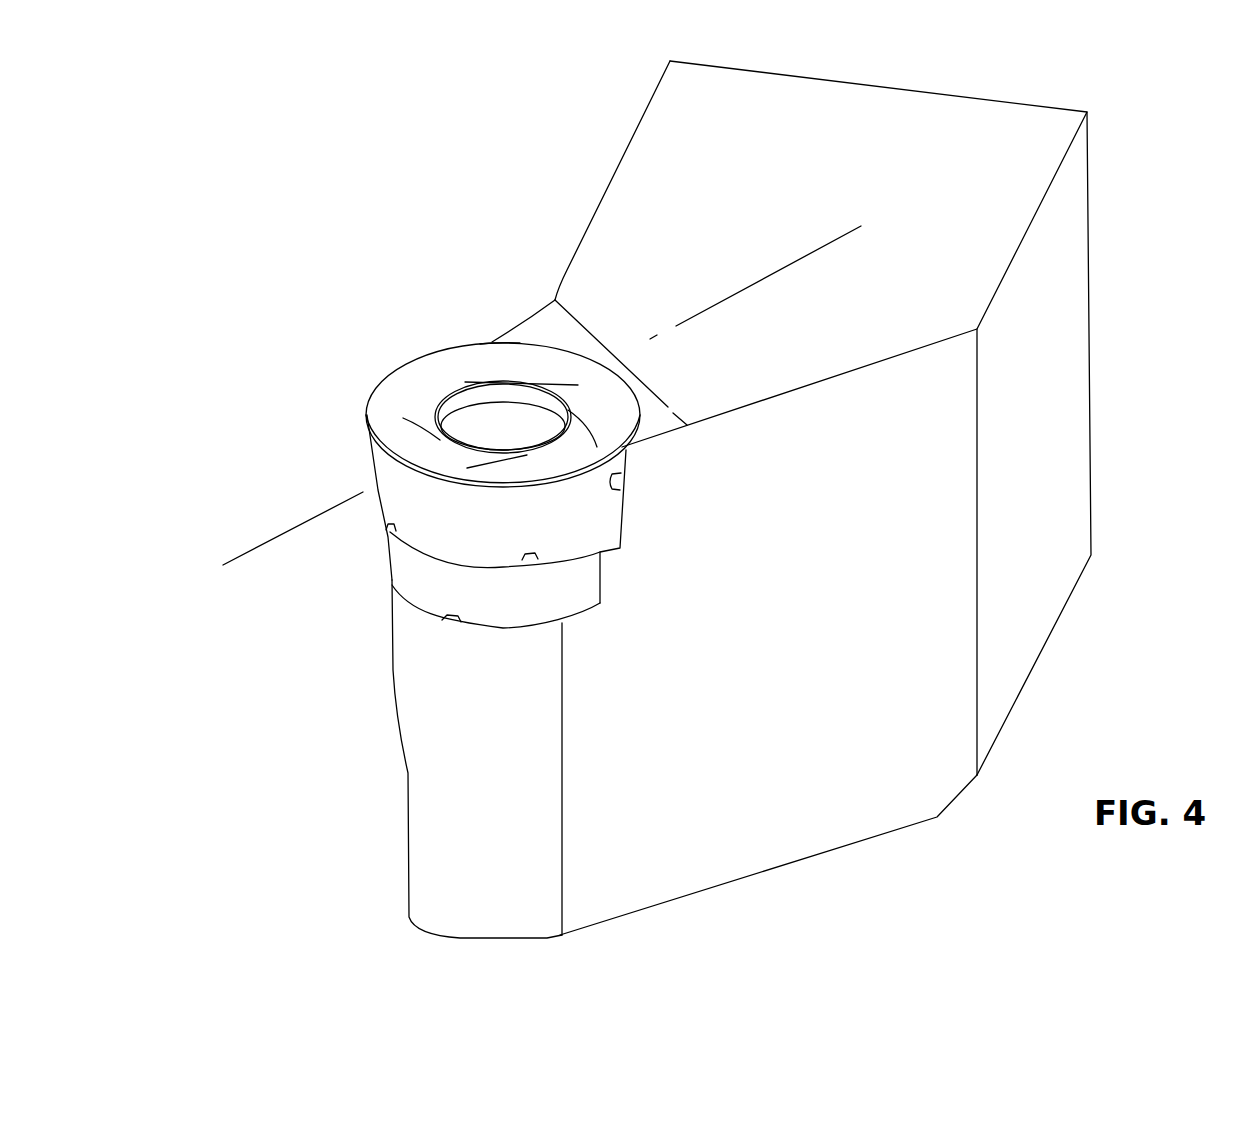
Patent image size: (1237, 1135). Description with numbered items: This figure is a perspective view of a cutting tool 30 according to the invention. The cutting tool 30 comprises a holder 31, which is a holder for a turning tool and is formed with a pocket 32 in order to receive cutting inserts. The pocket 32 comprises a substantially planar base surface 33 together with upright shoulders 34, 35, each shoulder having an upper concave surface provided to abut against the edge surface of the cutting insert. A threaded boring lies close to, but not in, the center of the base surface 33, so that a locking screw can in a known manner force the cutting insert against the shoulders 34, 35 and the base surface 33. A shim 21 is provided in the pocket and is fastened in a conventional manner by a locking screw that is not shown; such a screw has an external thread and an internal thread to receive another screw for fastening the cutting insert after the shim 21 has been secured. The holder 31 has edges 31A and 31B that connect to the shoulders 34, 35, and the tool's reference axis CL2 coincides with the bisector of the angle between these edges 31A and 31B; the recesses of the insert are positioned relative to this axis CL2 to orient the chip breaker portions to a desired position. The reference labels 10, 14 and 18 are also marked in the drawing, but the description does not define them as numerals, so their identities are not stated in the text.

The cutting insert / ring 10 is at (372, 381).
The flange top surface 14 is at (365, 413).
The central bore 18 is at (470, 373).
The shim 21 is at (427, 583).
The cutting tool 30 is at (410, 228).
The holder 31 is at (934, 267).
The edge of the holder 31A is at (758, 401).
The edge of the holder 31B is at (518, 322).
The pocket 32 is at (622, 382).
The base surface 33 is at (440, 619).
The shoulder 34 is at (622, 490).
The shoulder 35 is at (505, 342).
The axis of the tool CL2 is at (283, 528).